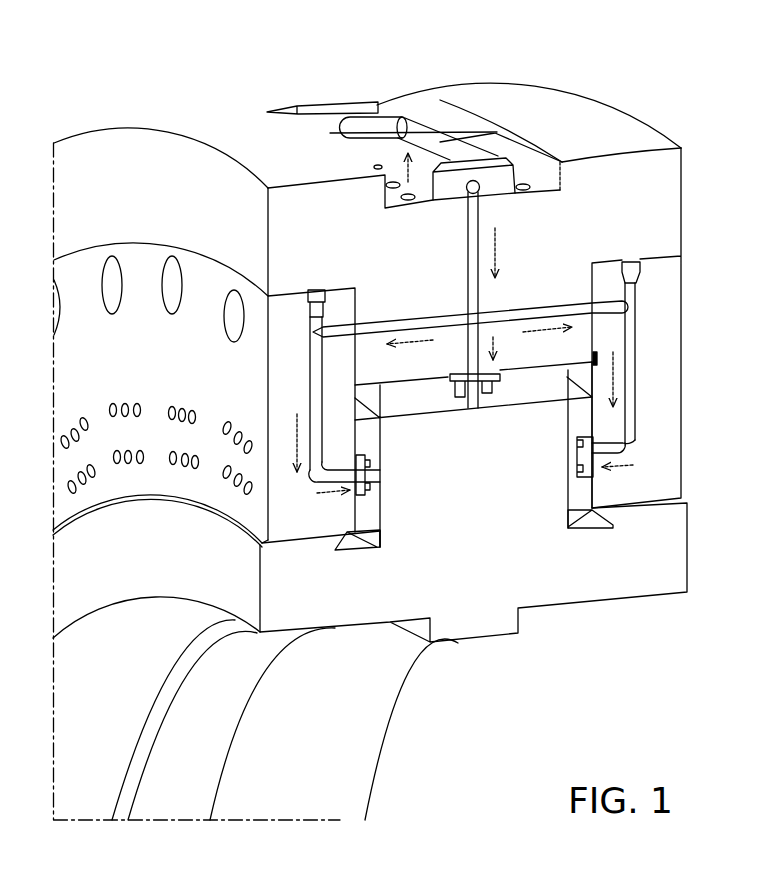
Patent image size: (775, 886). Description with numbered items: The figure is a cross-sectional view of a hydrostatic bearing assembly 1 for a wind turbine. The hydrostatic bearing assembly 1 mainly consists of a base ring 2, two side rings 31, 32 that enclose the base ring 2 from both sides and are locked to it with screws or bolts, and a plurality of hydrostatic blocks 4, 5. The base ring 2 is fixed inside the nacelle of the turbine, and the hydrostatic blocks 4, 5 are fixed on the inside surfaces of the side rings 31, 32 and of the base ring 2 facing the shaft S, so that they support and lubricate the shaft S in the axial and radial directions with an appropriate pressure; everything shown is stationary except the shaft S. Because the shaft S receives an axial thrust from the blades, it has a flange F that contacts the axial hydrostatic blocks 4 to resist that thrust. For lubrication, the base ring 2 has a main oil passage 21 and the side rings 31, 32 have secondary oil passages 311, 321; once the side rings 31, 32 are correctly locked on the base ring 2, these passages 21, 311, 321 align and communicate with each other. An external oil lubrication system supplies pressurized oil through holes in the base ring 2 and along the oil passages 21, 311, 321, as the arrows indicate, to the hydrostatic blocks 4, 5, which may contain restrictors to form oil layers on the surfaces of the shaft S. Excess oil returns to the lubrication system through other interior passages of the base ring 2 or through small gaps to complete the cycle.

The hydrostatic bearing assembly 1 is at (270, 58).
The base ring 2 is at (645, 197).
The main oil passage 21 is at (468, 252).
The side ring 31 is at (268, 368).
The secondary oil passage 311 is at (306, 408).
The side ring 32 is at (670, 373).
The secondary oil passage 321 is at (628, 408).
The axial hydrostatic block 4 is at (363, 512).
The hydrostatic block 5 is at (535, 387).
The flange F is at (484, 502).
The shaft S is at (512, 570).